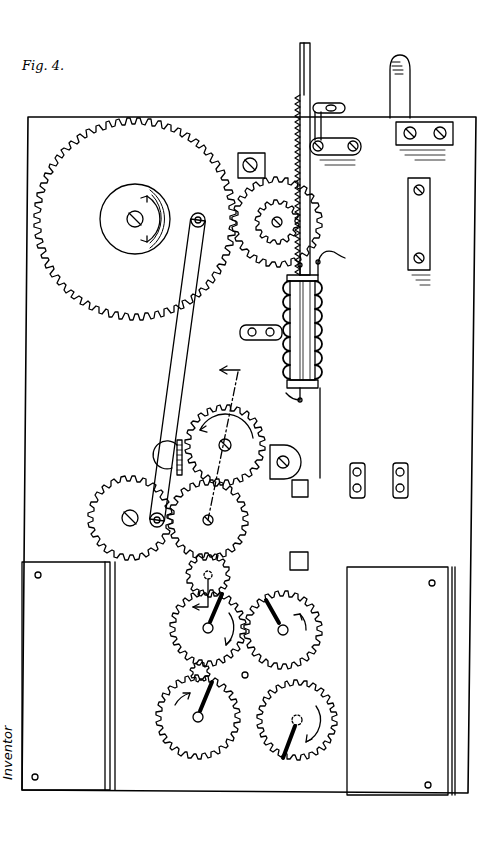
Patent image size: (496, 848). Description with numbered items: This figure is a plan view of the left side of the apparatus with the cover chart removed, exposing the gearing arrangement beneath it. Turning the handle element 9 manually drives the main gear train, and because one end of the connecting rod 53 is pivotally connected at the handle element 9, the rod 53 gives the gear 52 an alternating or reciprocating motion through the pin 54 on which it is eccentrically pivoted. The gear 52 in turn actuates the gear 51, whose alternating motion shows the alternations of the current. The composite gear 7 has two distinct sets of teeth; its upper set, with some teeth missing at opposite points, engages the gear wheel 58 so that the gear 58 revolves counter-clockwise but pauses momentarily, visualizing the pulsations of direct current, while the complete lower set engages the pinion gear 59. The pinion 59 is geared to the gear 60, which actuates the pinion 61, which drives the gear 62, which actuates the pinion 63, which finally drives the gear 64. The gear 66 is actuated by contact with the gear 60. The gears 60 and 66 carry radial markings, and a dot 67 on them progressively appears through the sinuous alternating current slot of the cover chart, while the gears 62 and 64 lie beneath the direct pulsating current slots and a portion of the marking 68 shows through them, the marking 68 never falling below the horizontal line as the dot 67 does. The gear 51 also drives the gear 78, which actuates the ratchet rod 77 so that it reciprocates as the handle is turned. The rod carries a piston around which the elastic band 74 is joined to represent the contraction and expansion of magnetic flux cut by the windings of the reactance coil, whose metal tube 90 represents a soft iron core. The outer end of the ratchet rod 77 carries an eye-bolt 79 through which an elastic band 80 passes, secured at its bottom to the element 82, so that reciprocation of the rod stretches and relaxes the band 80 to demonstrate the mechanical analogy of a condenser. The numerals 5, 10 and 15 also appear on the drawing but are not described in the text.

The shaft axis 5 is at (231, 438).
The composite gear 7 is at (208, 520).
The handle element 9 is at (156, 514).
The shaft 10 is at (214, 521).
The wire 15 is at (296, 400).
The gear 51 is at (288, 250).
The gear 52 is at (160, 196).
The connecting rod 53 is at (172, 385).
The pin 54 is at (210, 207).
The gear wheel 58 is at (168, 440).
The pinion gear 59 is at (230, 579).
The gear 60 is at (185, 626).
The pinion 61 is at (192, 671).
The gear 62 is at (170, 713).
The pinion 63 is at (255, 740).
The gear 64 is at (312, 707).
The gear 66 is at (310, 627).
The dot 67 is at (210, 619).
The marking 68 is at (200, 715).
The elastic band 74 is at (318, 400).
The ratchet rod 77 is at (306, 172).
The gear 78 is at (282, 212).
The eye-bolt 79 is at (320, 104).
The elastic band 80 is at (300, 128).
The element 82 is at (345, 150).
The metal tube 90 is at (338, 257).